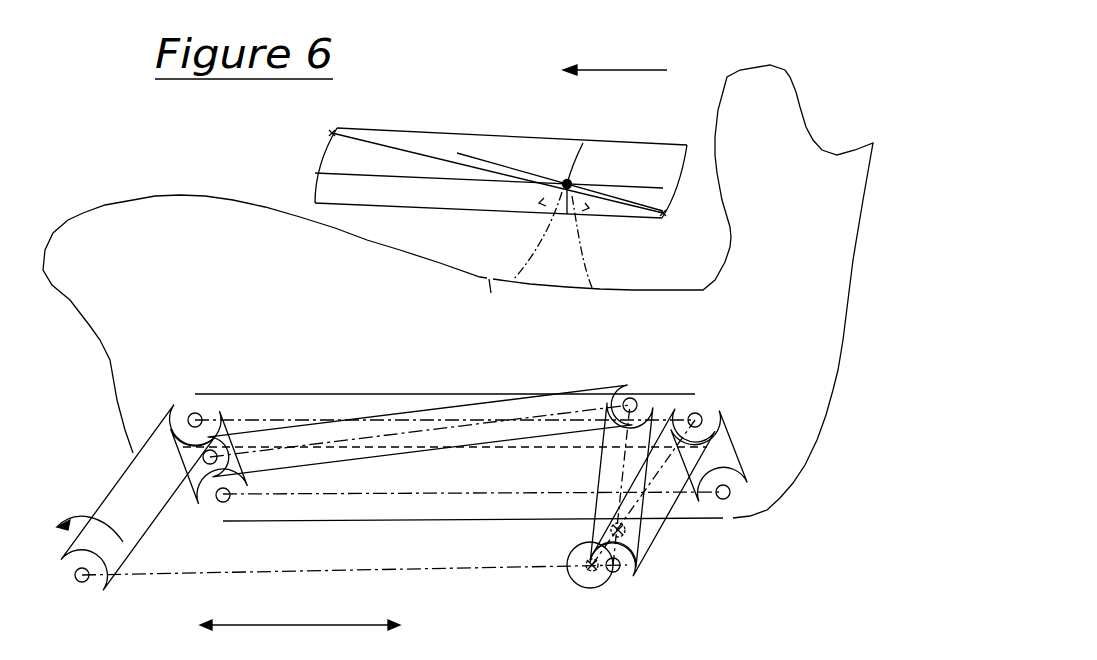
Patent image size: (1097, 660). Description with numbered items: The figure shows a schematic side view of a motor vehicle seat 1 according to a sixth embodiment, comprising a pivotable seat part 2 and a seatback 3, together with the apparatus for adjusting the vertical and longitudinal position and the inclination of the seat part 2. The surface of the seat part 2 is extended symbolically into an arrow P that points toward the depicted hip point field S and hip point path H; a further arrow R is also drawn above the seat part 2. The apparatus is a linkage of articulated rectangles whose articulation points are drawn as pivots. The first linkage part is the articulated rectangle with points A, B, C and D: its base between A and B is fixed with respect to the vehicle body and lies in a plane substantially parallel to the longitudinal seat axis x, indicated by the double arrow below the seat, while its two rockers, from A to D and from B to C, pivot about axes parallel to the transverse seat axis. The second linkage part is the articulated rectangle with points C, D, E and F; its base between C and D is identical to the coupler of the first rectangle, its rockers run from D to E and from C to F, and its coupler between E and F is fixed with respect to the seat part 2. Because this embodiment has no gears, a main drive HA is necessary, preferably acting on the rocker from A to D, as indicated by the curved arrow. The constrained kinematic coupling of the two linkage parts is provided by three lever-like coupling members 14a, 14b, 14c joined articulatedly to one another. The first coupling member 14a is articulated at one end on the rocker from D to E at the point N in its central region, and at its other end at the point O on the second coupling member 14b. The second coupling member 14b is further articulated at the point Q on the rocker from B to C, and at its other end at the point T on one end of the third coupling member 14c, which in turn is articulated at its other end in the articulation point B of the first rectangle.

The motor vehicle seat 1 is at (80, 113).
The pivotable seat part 2 is at (80, 243).
The seatback 3 is at (790, 122).
The hip point field S is at (640, 153).
The hip point path H is at (507, 158).
The arrow P is at (577, 197).
The direction of travel R is at (623, 70).
The articulation point A is at (62, 598).
The main drive HA is at (88, 507).
The articulation point D is at (200, 418).
The articulation point N is at (212, 455).
The articulation point E is at (220, 503).
The articulation point O is at (640, 392).
The articulation point C is at (705, 395).
The articulation point F is at (707, 520).
The articulation point T is at (608, 587).
The articulation point B is at (570, 587).
The articulation point Q is at (590, 537).
The first coupling member 14a is at (480, 413).
The second coupling member 14b is at (637, 527).
The third coupling member 14c is at (583, 583).
The longitudinal seat axis x is at (299, 637).